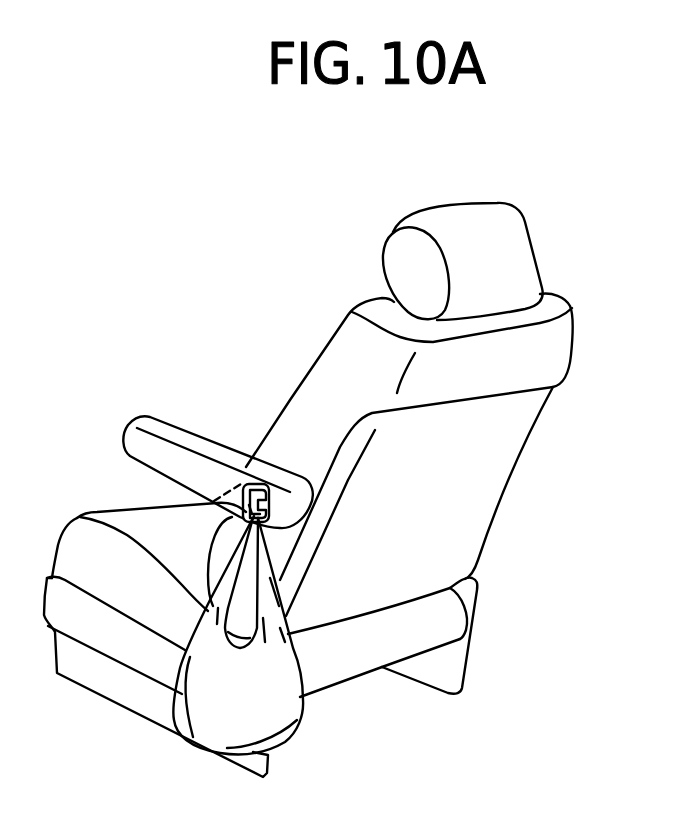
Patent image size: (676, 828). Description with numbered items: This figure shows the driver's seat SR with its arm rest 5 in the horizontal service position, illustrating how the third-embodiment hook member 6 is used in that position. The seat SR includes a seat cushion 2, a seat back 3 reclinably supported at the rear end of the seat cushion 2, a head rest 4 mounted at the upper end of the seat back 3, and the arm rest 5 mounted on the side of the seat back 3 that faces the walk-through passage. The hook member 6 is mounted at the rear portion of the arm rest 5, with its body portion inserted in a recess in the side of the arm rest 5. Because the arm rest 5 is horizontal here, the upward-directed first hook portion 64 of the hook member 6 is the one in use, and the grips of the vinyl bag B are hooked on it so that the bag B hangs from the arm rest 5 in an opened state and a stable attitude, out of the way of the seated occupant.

The driver's seat SR is at (300, 252).
The seat cushion 2 is at (97, 537).
The seat back 3 is at (523, 367).
The head rest 4 is at (508, 257).
The arm rest 5 is at (180, 433).
The hook member 6 is at (275, 478).
The first hook portion 64 is at (243, 522).
The vinyl bag B is at (277, 712).